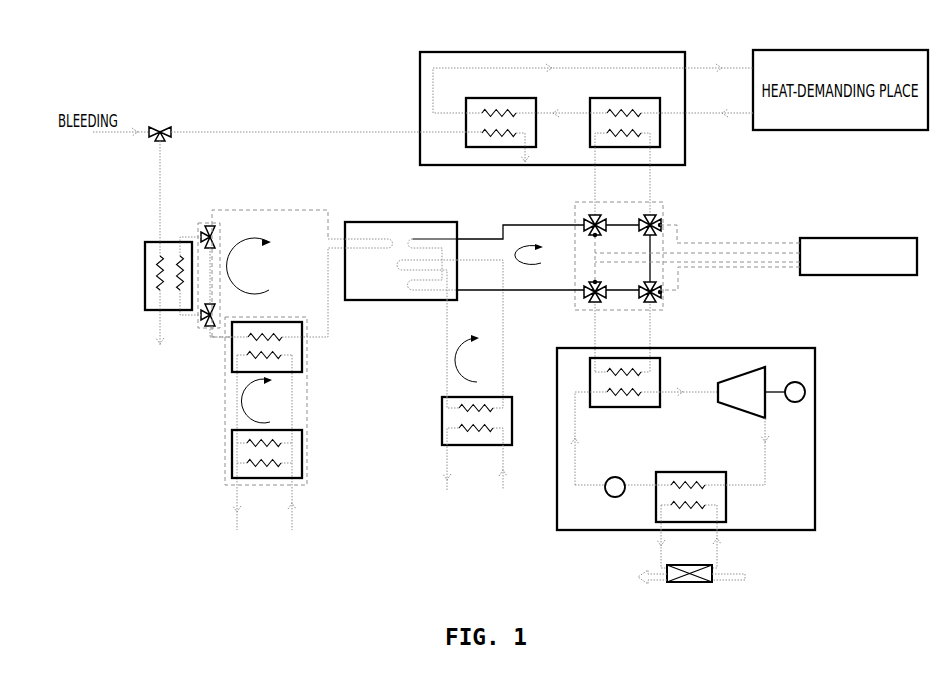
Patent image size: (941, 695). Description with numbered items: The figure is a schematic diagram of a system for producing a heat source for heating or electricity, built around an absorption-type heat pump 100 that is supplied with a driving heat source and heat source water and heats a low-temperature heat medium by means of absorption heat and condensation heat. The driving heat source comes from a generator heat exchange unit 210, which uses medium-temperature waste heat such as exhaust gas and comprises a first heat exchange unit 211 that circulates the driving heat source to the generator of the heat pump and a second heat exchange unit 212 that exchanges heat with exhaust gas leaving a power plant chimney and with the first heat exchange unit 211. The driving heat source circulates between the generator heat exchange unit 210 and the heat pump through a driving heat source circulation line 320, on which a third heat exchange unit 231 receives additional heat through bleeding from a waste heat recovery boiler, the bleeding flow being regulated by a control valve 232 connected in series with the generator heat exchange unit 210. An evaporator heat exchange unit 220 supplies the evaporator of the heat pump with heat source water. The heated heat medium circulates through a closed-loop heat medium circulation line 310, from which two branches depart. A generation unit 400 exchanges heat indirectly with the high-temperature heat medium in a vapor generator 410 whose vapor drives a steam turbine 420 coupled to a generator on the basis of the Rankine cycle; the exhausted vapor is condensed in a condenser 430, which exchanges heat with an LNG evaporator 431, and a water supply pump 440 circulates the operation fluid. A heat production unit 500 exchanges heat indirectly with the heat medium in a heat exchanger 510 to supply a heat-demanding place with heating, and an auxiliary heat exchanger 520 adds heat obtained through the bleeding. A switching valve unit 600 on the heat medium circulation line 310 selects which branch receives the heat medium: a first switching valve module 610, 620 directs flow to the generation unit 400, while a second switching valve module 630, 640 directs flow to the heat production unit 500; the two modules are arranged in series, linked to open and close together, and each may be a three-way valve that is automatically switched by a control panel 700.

The absorption-type heat pump 100 is at (395, 222).
The generator heat exchange unit 210 is at (225, 397).
The first heat exchange unit 211 is at (303, 355).
The second heat exchange unit 212 is at (303, 440).
The evaporator heat exchange unit 220 is at (442, 415).
The third heat exchange unit 231 is at (165, 242).
The control valve 232 is at (157, 126).
The heat medium circulation line 310 is at (528, 224).
The driving heat source circulation line 320 is at (283, 209).
The generation unit 400 is at (768, 347).
The vapor generator 410 is at (632, 408).
The steam turbine 420 is at (728, 383).
The condenser 430 is at (692, 472).
The LNG evaporator 431 is at (692, 565).
The water supply pump 440 is at (613, 477).
The heat production unit 500 is at (572, 52).
The heat exchanger 510 is at (660, 135).
The auxiliary heat exchanger 520 is at (478, 148).
The switching valve unit 600 is at (665, 202).
The first switching valve module 610 is at (583, 294).
The first switching valve module 620 is at (660, 300).
The second switching valve module 630 is at (660, 214).
The second switching valve module 640 is at (588, 216).
The control panel 700 is at (835, 238).